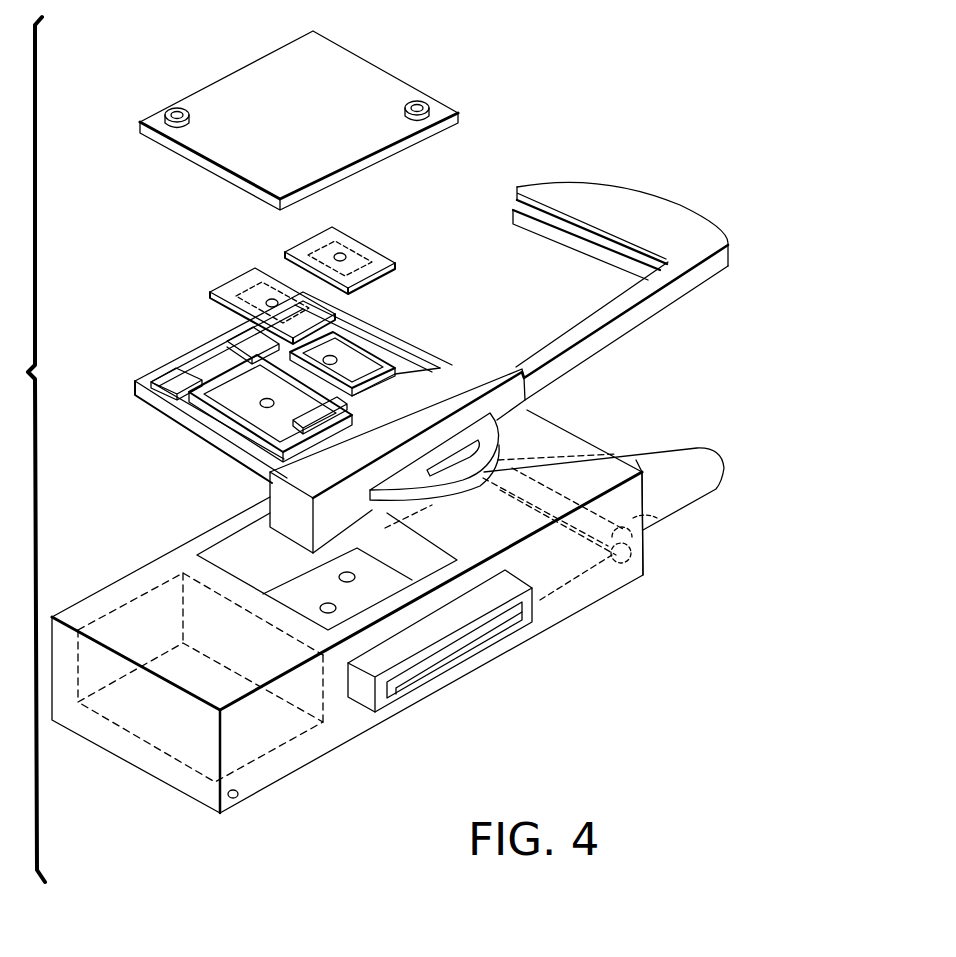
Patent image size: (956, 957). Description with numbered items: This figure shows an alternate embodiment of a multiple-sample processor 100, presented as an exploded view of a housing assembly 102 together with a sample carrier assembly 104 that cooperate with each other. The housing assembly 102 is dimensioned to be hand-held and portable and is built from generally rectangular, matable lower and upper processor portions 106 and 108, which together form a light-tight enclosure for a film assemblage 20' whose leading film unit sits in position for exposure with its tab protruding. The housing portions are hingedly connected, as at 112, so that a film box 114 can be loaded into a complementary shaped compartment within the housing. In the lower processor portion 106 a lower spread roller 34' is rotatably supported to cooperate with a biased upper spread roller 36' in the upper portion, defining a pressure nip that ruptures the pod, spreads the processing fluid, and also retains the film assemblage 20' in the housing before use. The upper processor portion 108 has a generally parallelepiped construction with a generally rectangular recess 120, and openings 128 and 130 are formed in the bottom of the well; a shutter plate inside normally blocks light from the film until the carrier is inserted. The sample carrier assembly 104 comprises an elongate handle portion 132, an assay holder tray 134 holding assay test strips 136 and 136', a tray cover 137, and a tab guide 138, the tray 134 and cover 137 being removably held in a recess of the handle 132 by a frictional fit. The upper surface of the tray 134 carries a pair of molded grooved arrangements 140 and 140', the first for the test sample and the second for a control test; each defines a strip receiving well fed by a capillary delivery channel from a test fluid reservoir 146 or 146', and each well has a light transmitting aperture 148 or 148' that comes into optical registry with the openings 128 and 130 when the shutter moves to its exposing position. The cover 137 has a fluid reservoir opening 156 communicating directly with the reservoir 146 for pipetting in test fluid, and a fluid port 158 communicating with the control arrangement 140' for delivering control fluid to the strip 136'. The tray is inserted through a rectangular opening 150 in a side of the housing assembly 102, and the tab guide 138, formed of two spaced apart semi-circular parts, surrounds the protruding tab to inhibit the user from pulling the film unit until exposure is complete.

The multiple-sample processor 100 is at (778, 155).
The housing assembly 102 is at (634, 598).
The sample carrier assembly 104 is at (725, 340).
The lower processor portion 106 is at (568, 606).
The upper processor portion 108 is at (670, 468).
The hinged connection 112 is at (238, 800).
The film box 114 is at (140, 612).
The rectangular recess 120 is at (417, 558).
The opening 128 is at (323, 604).
The opening 130 is at (340, 581).
The elongate handle portion 132 is at (616, 336).
The assay holder tray 134 is at (348, 338).
The assay test strip 136 is at (261, 288).
The assay test strip 136' is at (346, 244).
The tray cover 137 is at (262, 57).
The tab guide 138 is at (640, 203).
The molded grooved arrangement 140 is at (227, 391).
The molded grooved arrangement 140' is at (371, 372).
The test fluid reservoir 146 is at (175, 363).
The test fluid reservoir 146' is at (393, 378).
The light transmitting aperture 148 is at (208, 431).
The light transmitting aperture 148' is at (361, 401).
The rectangular opening 150 is at (457, 646).
The fluid reservoir opening 156 is at (176, 106).
The fluid port 158 is at (418, 100).
The film assemblage 20' is at (689, 517).
The lower spread roller 34' is at (661, 572).
The upper spread roller 36' is at (597, 511).